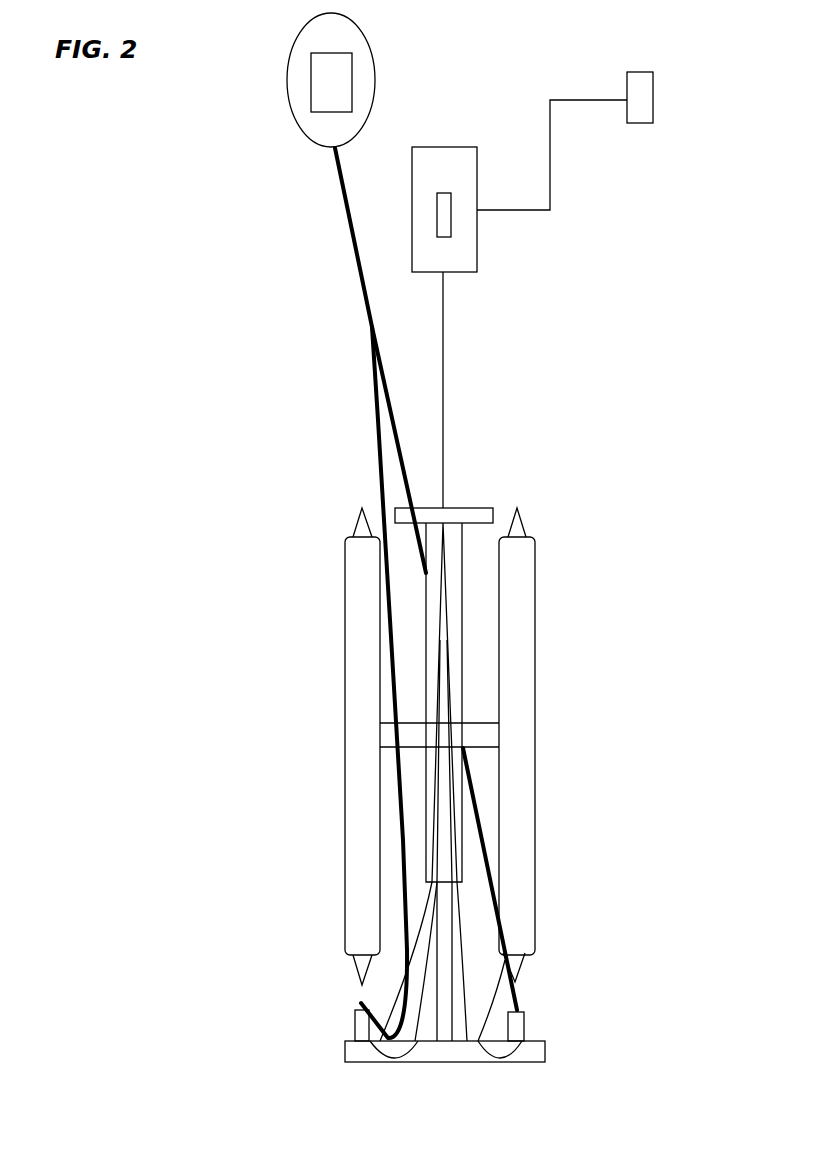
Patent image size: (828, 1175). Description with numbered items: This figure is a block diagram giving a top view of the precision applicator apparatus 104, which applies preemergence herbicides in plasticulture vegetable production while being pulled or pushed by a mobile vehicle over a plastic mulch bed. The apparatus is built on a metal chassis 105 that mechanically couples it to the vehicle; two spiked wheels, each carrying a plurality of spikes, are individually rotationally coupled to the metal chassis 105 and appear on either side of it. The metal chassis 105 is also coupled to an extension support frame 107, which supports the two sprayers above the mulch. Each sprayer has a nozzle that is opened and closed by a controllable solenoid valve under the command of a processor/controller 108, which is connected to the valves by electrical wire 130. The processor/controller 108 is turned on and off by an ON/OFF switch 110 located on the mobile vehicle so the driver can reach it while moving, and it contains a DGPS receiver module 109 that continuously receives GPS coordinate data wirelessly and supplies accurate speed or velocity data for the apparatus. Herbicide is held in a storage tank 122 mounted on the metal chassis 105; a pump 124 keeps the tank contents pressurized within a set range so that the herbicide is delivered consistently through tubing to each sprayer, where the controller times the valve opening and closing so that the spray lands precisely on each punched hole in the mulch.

The precision applicator apparatus 104 is at (255, 500).
The metal chassis 105 is at (458, 503).
The extension support frame 107 is at (358, 1062).
The processor/controller 108 is at (477, 243).
The DGPS receiver module 109 is at (452, 223).
The ON/OFF switch 110 is at (653, 88).
The storage tank 122 is at (293, 110).
The pump 124 is at (350, 100).
The electrical wire 130 is at (437, 1062).